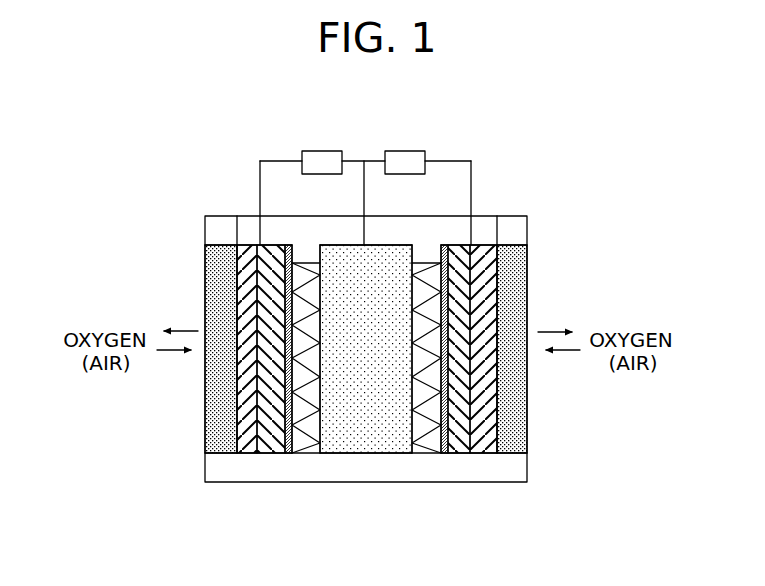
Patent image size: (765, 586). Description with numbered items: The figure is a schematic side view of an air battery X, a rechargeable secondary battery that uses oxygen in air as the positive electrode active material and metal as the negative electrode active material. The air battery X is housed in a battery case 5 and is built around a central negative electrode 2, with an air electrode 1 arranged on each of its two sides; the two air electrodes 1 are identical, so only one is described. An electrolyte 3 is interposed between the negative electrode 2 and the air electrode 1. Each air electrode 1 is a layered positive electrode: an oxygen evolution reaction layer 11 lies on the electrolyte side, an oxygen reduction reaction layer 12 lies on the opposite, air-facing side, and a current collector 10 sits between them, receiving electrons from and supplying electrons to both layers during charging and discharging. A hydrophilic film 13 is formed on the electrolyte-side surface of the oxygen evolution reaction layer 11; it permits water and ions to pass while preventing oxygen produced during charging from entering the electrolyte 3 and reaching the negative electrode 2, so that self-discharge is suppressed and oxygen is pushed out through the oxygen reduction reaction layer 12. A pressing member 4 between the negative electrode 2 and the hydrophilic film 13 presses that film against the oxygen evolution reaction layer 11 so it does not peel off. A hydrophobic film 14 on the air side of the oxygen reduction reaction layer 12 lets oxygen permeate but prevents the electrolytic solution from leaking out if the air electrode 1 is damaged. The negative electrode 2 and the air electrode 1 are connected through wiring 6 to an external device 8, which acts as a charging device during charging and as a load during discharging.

The air battery X is at (164, 153).
The air electrode 1 is at (390, 383).
The negative electrode 2 is at (353, 245).
The electrolyte 3 is at (423, 265).
The pressing member 4 is at (306, 280).
The battery case 5 is at (490, 216).
The wiring 6 is at (437, 161).
The external device 8 is at (398, 151).
The current collector 10 is at (465, 390).
The oxygen evolution reaction layer 11 is at (455, 453).
The oxygen reduction reaction layer 12 is at (483, 453).
The hydrophilic film 13 is at (441, 453).
The hydrophobic film 14 is at (536, 390).